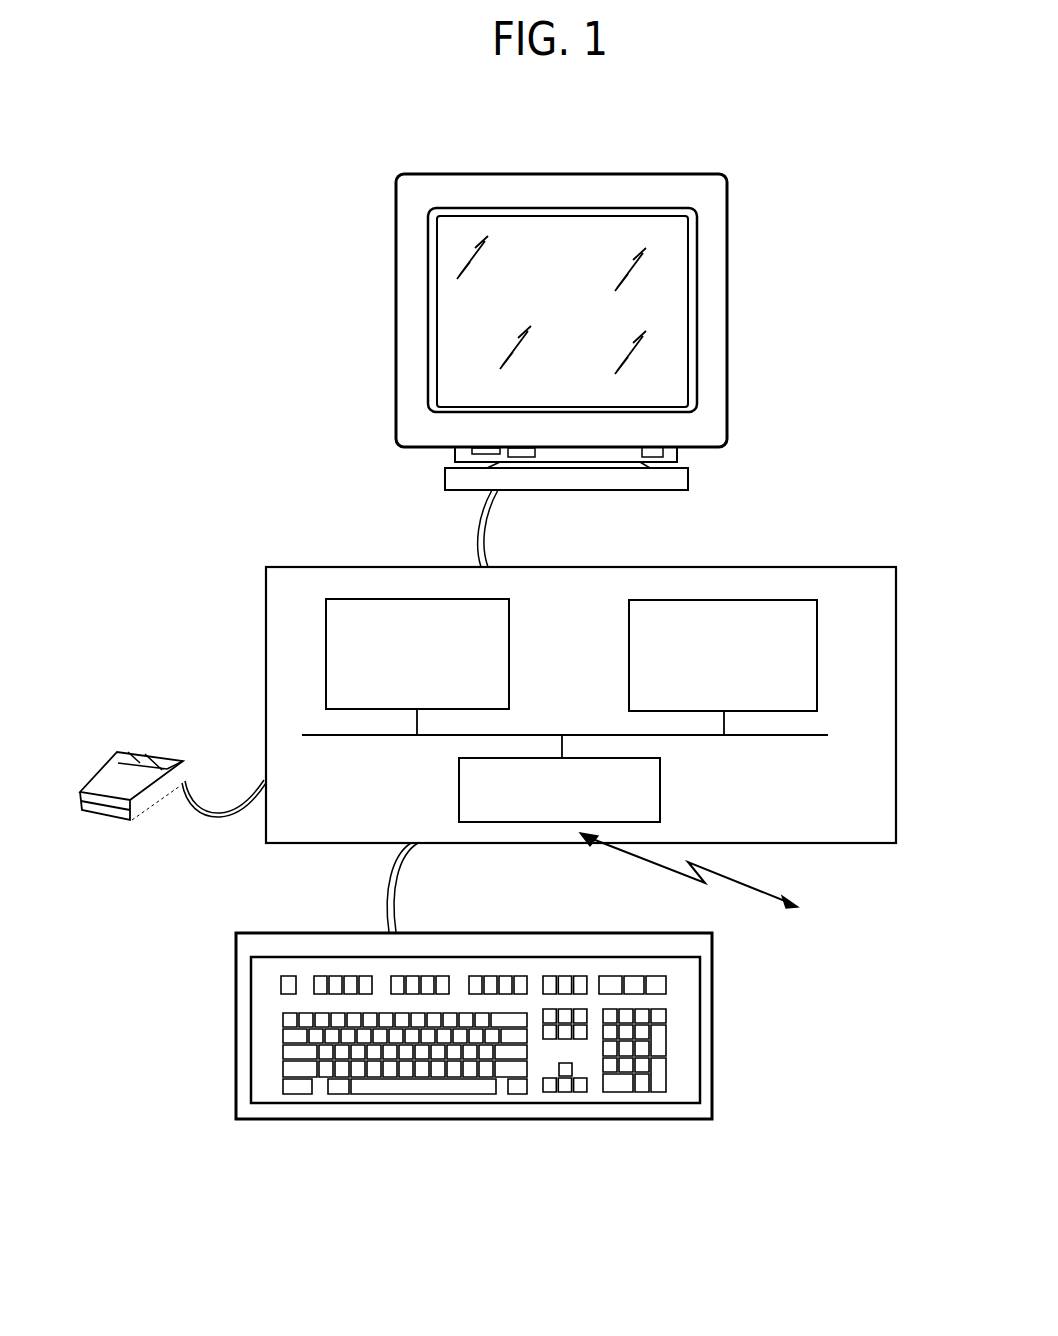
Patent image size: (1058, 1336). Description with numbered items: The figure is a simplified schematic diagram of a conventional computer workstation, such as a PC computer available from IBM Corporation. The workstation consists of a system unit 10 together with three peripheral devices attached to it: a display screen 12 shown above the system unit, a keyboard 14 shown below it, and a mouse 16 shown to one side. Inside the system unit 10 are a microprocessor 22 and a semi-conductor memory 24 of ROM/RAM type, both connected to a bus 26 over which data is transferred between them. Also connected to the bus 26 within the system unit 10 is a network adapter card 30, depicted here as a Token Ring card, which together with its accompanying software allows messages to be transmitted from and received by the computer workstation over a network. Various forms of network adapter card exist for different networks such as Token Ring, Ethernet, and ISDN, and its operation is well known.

The system unit 10 is at (845, 567).
The display screen 12 is at (728, 265).
The keyboard 14 is at (233, 990).
The mouse 16 is at (102, 773).
The microprocessor 22 is at (510, 623).
The semi-conductor memory 24 is at (818, 613).
The bus 26 is at (780, 735).
The network adapter card 30 is at (660, 792).